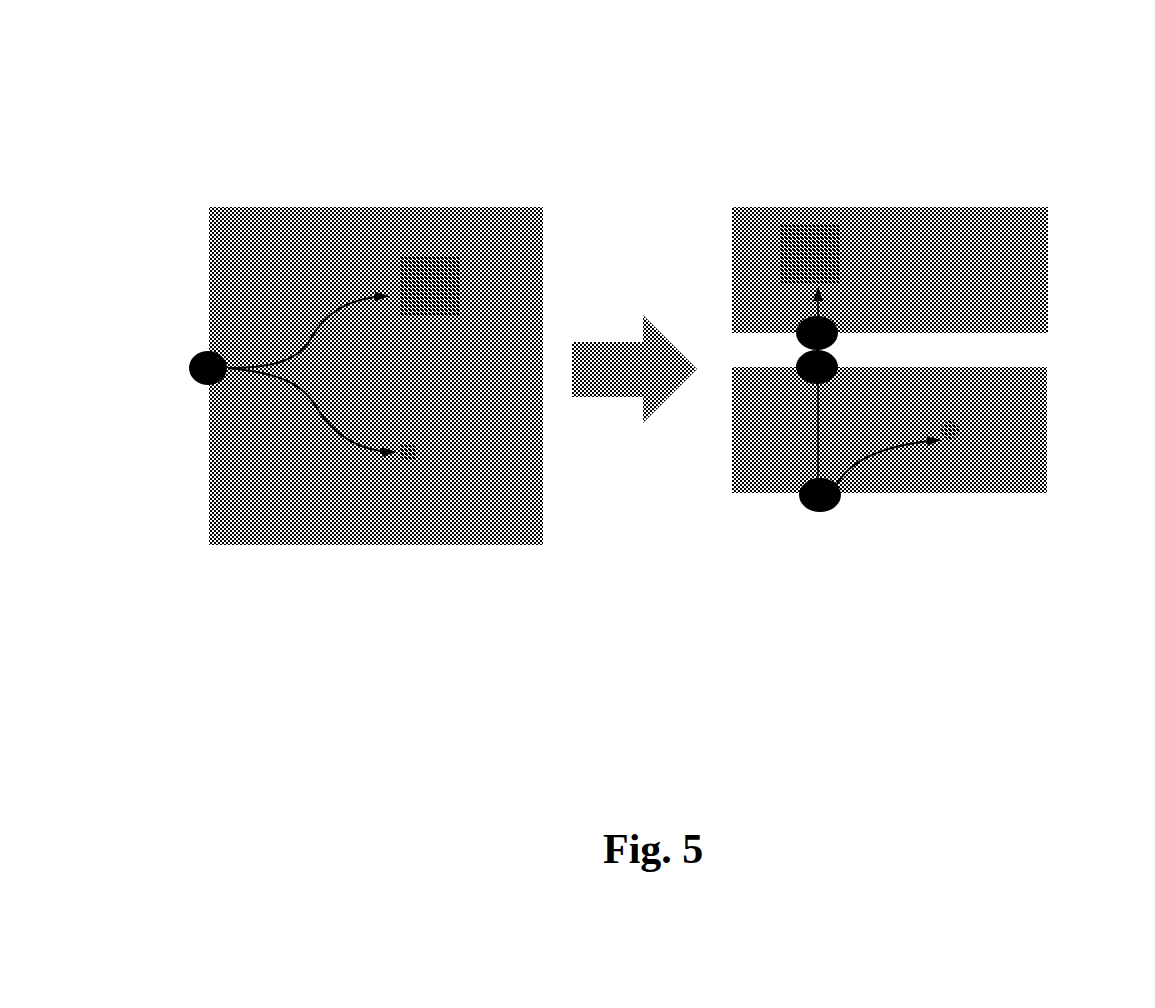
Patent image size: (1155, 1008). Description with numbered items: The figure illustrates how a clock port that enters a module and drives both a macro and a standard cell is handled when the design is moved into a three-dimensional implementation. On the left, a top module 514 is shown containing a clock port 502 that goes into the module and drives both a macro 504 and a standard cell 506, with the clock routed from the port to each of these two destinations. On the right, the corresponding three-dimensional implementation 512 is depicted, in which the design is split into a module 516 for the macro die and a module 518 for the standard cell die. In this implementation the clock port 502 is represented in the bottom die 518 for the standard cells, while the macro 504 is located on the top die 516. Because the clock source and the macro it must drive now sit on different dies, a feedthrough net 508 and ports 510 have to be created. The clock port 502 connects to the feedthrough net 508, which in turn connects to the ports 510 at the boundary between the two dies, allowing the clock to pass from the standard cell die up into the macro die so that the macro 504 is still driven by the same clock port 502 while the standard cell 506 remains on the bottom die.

The clock port 502 is at (200, 352).
The macro 504 is at (431, 255).
The standard cell 506 is at (408, 458).
The feedthrough net 508 is at (806, 436).
The ports 510 is at (785, 348).
The 3D implementation 512 is at (886, 325).
The top module 514 is at (201, 159).
The module for the macro die 516 is at (1023, 206).
The module for the standard cell die 518 is at (1023, 503).